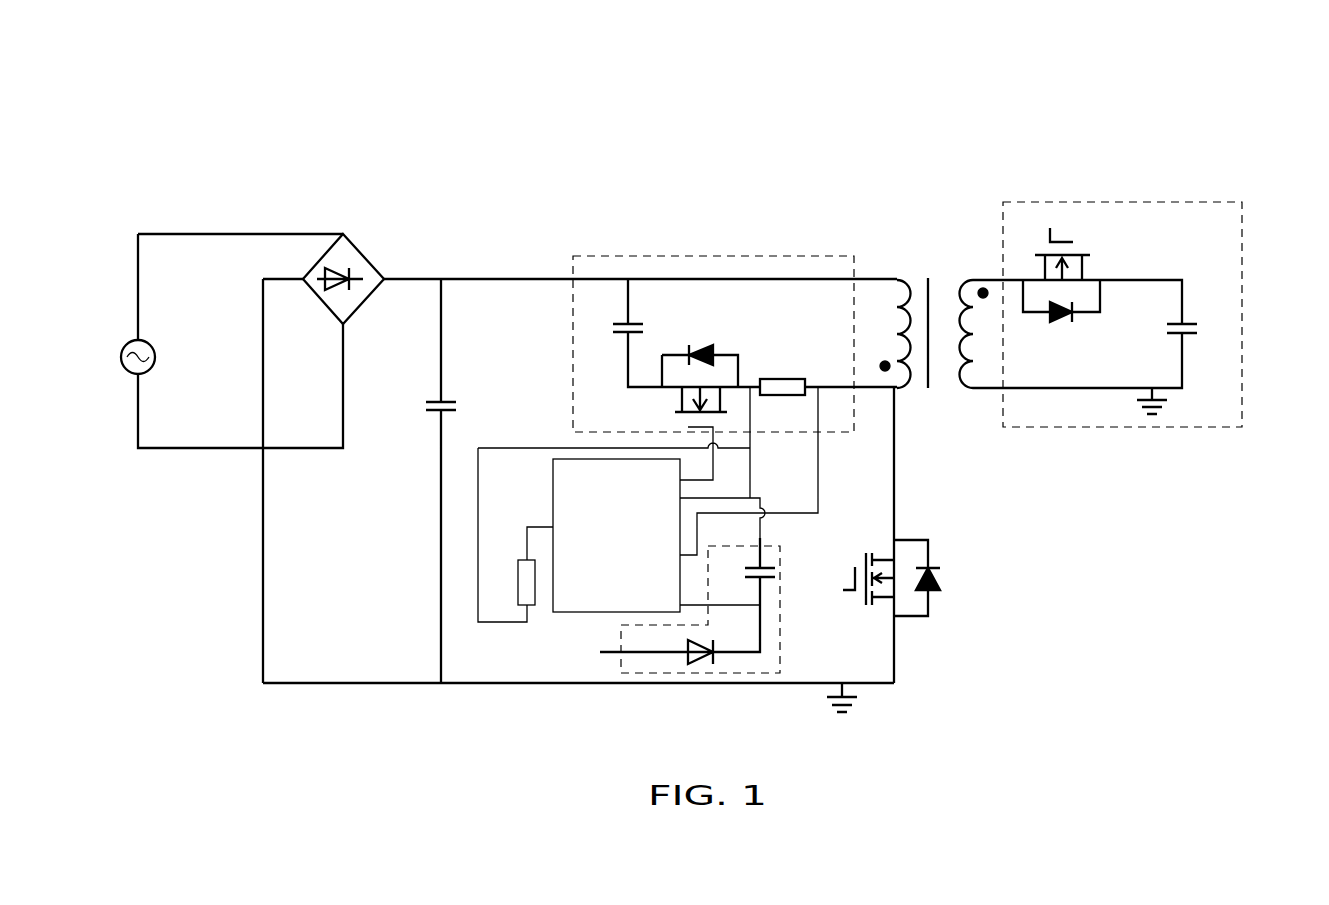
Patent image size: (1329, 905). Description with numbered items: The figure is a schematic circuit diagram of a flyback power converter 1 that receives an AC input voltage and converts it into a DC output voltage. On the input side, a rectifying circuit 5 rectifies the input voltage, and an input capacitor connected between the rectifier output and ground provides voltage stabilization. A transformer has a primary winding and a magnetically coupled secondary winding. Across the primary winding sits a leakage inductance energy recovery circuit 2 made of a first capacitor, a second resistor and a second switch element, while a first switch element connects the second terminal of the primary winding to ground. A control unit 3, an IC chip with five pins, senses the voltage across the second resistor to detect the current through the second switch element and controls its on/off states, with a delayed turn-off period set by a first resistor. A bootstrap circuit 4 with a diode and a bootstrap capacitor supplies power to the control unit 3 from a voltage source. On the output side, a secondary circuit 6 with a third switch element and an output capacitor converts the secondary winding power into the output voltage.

The flyback power converter 1 is at (1319, 101).
The leakage inductance energy recovery circuit 2 is at (662, 253).
The control unit 3 is at (580, 613).
The bootstrap circuit 4 is at (778, 632).
The rectifying circuit 5 is at (363, 252).
The secondary circuit 6 is at (1210, 202).